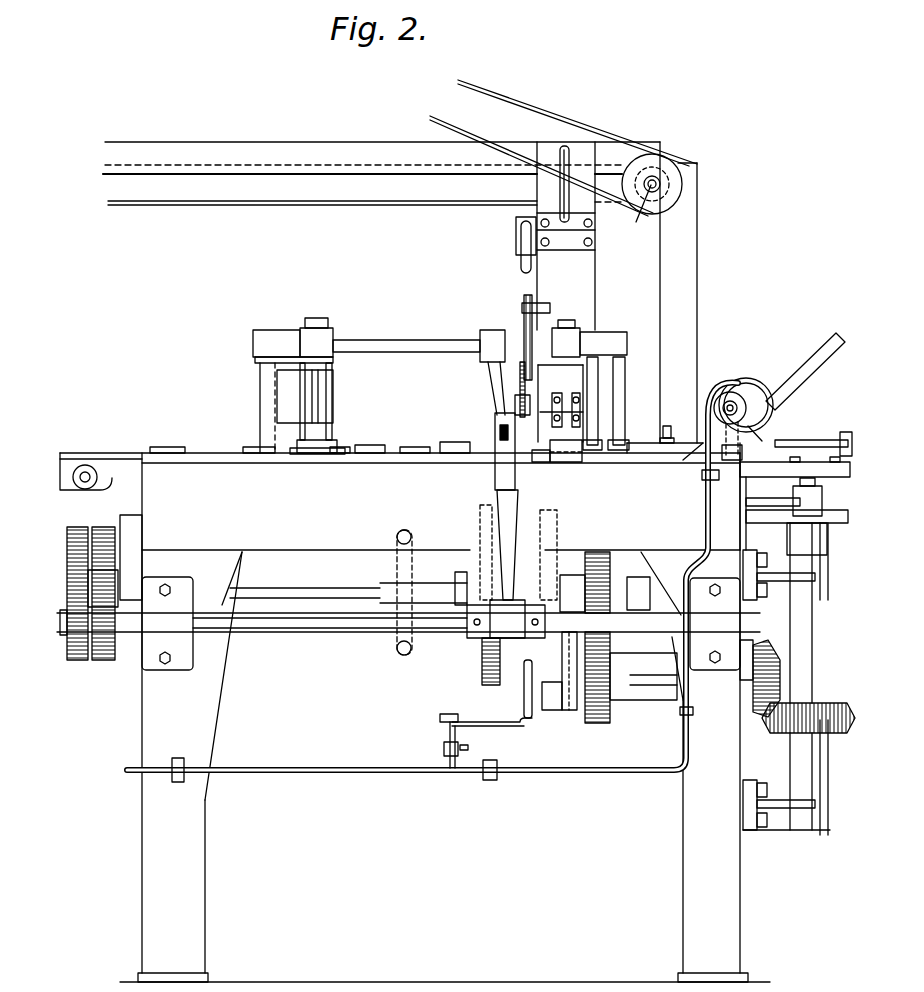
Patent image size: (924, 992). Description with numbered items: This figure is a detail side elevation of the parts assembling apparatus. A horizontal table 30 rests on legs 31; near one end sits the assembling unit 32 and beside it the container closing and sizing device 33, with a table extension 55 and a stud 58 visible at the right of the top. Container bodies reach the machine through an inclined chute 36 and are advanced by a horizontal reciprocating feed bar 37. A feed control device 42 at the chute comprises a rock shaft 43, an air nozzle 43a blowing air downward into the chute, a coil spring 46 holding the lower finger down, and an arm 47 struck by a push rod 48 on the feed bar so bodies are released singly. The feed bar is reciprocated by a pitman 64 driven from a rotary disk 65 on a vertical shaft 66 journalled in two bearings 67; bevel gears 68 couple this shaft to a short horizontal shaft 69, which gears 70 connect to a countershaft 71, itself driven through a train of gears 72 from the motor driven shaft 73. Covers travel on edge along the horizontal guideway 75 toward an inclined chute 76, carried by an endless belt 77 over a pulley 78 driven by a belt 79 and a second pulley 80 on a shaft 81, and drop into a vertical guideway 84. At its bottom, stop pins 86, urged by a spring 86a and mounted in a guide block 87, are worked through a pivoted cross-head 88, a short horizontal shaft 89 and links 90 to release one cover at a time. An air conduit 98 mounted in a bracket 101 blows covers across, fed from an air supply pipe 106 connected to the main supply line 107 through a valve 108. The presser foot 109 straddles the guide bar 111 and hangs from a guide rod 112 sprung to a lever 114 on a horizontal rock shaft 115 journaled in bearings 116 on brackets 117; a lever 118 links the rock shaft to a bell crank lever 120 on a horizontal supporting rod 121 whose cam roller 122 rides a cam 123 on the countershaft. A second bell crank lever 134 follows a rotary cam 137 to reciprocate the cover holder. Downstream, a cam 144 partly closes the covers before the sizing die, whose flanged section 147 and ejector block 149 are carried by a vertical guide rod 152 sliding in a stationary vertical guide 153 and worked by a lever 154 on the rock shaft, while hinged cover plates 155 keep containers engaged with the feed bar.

The horizontal table 30 is at (323, 504).
The legs 31 is at (190, 825).
The assembling unit 32 is at (620, 325).
The container closing and sizing device 33 is at (360, 389).
The inclined chute 36 is at (815, 364).
The horizontal reciprocating feed bar 37 is at (782, 472).
The feed control device 42 is at (770, 384).
The rock shaft 43 is at (730, 392).
The air nozzle 43a is at (752, 382).
The coil spring 46 is at (766, 426).
The arm 47 is at (754, 445).
The push rod 48 is at (815, 440).
The table extension 55 is at (640, 446).
The stud 58 is at (667, 426).
The pitman 64 is at (762, 508).
The rotary disk 65 is at (754, 514).
The vertical shaft 66 is at (806, 622).
The bearings 67 is at (826, 594).
The bevel gears 68 is at (783, 675).
The short horizontal shaft 69 is at (655, 688).
The gears 70 is at (600, 552).
The countershaft 71 is at (398, 570).
The train of gears 72 is at (106, 665).
The motor driven shaft 73 is at (58, 600).
The horizontal guideway 75 is at (356, 149).
The inclined chute 76 is at (694, 245).
The endless belt 77 is at (434, 200).
The pulley 78 is at (668, 170).
The belt 79 is at (556, 118).
The second pulley 80 is at (679, 181).
The shaft 81 is at (641, 213).
The vertical guideway 84 is at (586, 292).
The stop pins 86 is at (548, 420).
The spring 86a is at (522, 324).
The guide block 87 is at (569, 379).
The pivoted cross-head 88 is at (583, 400).
The short horizontal shaft 89 is at (552, 402).
The links 90 is at (520, 400).
The air conduit 98 is at (566, 150).
The bracket 101 is at (580, 250).
The air supply pipe 106 is at (522, 270).
The main supply line 107 is at (366, 773).
The valve 108 is at (468, 752).
The presser foot 109 is at (565, 462).
The guide bar 111 is at (548, 462).
The guide rod 112 is at (570, 435).
The lever 114 is at (566, 300).
The horizontal rock shaft 115 is at (437, 350).
The bearings 116 is at (278, 332).
The brackets 117 is at (260, 388).
The lever 118 is at (490, 372).
The bell crank lever 120 is at (497, 477).
The horizontal supporting rod 121 is at (372, 634).
The cam roller 122 is at (482, 640).
The cam 123 is at (482, 677).
The bell crank lever 134 is at (567, 692).
The rotary cam 137 is at (546, 702).
The cam 144 is at (370, 447).
The flanged section 147 is at (292, 456).
The ejector block 149 is at (318, 458).
The vertical guide rod 152 is at (324, 428).
The stationary vertical guide 153 is at (318, 397).
The lever 154 is at (322, 338).
The hinged cover plates 155 is at (474, 450).